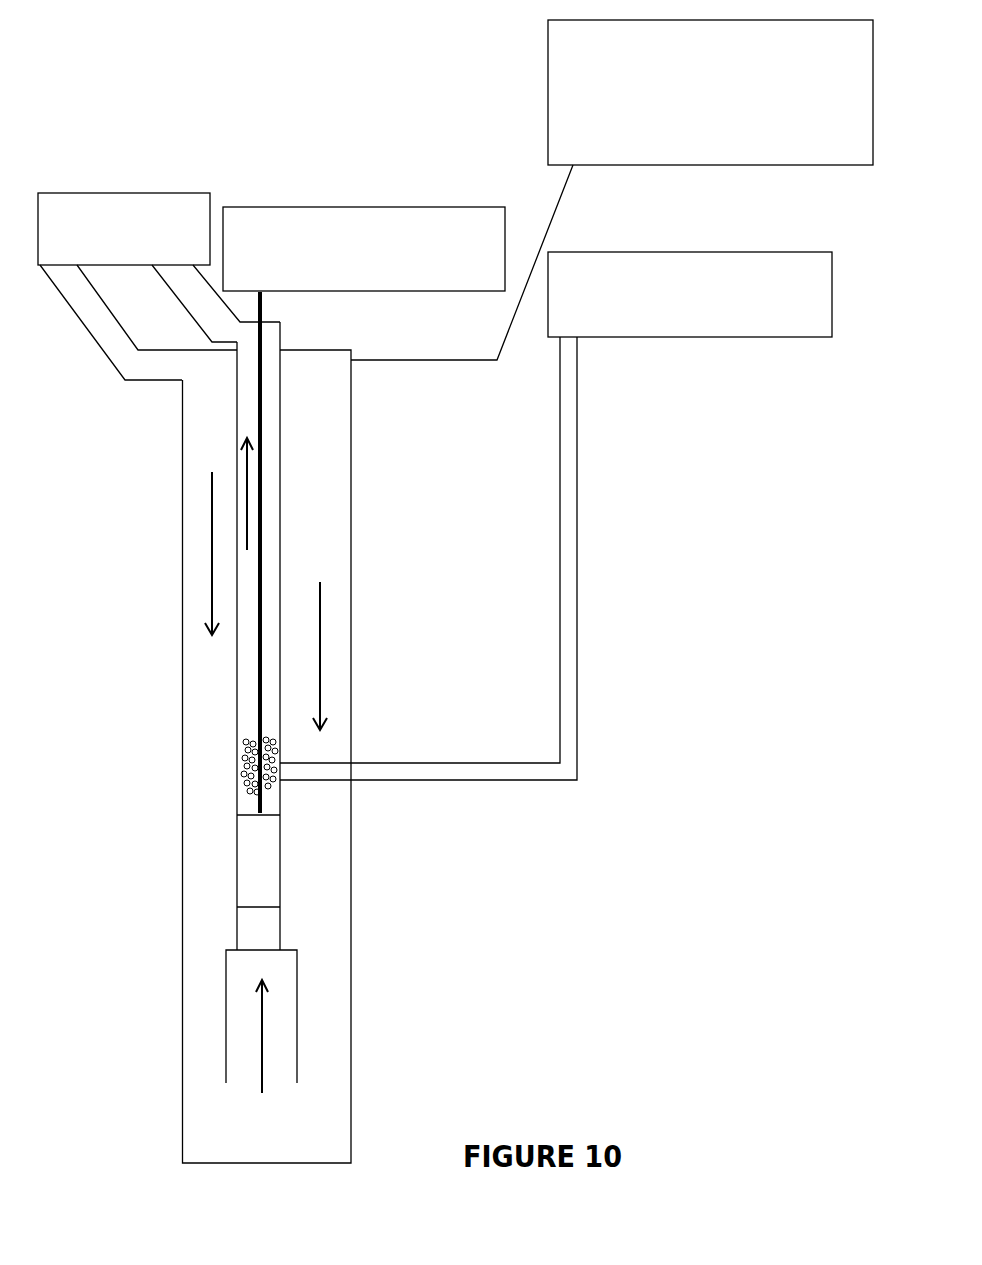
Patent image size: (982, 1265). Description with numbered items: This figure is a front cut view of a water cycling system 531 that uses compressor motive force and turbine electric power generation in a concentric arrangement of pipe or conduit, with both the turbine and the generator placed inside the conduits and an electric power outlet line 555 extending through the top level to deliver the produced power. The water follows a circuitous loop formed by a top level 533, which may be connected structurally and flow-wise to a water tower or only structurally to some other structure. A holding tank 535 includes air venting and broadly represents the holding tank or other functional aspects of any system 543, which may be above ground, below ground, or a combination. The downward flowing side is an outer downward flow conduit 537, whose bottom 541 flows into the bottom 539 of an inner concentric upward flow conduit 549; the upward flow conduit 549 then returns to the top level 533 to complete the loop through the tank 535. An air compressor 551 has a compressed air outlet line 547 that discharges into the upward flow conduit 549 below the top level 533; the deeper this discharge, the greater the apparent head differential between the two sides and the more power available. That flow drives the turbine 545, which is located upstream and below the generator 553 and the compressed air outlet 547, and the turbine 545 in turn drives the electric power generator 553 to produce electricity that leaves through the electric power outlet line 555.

The water cycling system 531 is at (188, 135).
The top level 533 is at (252, 358).
The holding tank 535 is at (122, 192).
The outer downward flow conduit 537 is at (210, 793).
The bottom of inner concentric upward flow conduit 539 is at (253, 1042).
The bottom of outer downward flow conduit 541 is at (254, 1123).
The any system 543 is at (547, 105).
The turbine 545 is at (270, 930).
The compressed air outlet line 547 is at (560, 723).
The inner concentric upward flow conduit 549 is at (247, 602).
The air compressor 551 is at (652, 338).
The electric power generator 553 is at (258, 872).
The electric power outlet line 555 is at (336, 207).